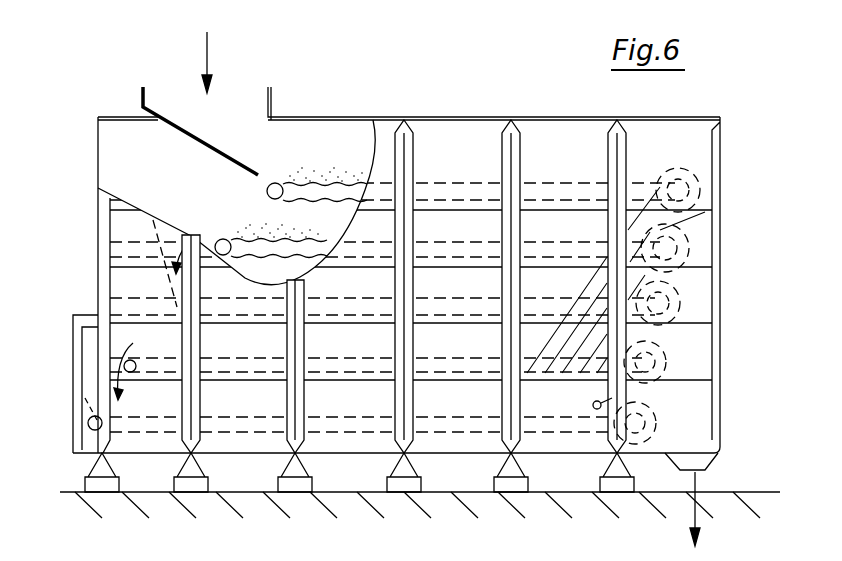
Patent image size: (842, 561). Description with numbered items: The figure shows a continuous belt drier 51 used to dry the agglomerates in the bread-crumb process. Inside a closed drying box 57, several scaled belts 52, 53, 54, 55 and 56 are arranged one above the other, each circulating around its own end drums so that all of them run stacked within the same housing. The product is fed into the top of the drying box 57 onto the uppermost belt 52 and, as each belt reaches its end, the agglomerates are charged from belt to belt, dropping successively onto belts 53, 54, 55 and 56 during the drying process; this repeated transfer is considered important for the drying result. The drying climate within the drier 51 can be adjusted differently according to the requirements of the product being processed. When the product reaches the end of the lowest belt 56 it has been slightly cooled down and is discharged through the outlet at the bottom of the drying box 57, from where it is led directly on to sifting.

The drier 51 is at (500, 117).
The scaled belt 52 is at (431, 190).
The scaled belt 53 is at (652, 247).
The scaled belt 54 is at (645, 304).
The scaled belt 55 is at (640, 363).
The scaled belt 56 is at (632, 424).
The drying box 57 is at (715, 138).